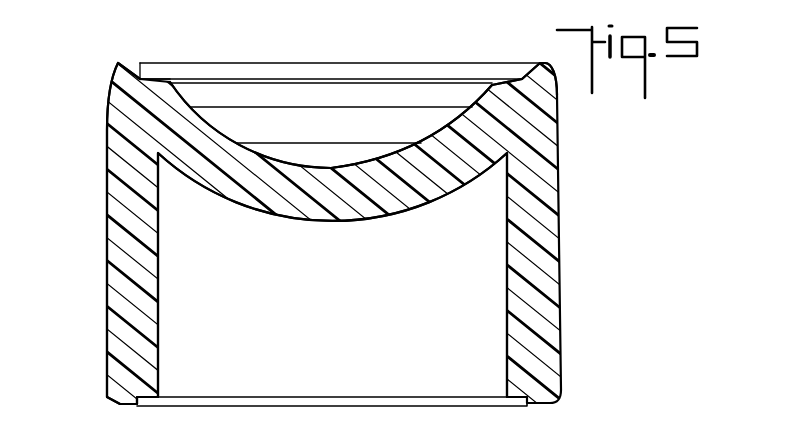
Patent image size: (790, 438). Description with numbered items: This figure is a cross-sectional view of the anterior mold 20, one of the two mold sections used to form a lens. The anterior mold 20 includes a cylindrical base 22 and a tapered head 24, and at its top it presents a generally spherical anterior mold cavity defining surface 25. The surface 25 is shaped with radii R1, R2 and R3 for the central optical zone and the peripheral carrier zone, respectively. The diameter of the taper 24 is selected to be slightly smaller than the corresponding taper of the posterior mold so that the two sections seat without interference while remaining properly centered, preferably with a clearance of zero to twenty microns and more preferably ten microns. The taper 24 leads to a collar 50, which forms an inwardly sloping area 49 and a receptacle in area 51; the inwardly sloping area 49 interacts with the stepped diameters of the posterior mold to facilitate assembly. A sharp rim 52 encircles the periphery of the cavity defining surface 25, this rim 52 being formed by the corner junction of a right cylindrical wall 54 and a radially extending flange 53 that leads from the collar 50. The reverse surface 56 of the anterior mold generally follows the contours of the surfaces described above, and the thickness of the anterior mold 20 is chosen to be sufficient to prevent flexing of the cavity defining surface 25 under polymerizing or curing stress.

The anterior mold 20 is at (583, 178).
The cylindrical base 22 is at (118, 325).
The tapered head 24 is at (107, 207).
The anterior mold cavity defining surface 25 is at (460, 152).
The inwardly sloping area 49 is at (552, 66).
The collar 50 is at (116, 71).
The receptacle area 51 is at (153, 63).
The sharp rim 52 is at (172, 83).
The radially extending flange 53 is at (166, 79).
The right cylindrical wall 54 is at (303, 80).
The reverse surface 56 is at (158, 263).
The radius R1 is at (310, 167).
The radius R2 is at (447, 150).
The radius R3 is at (487, 98).